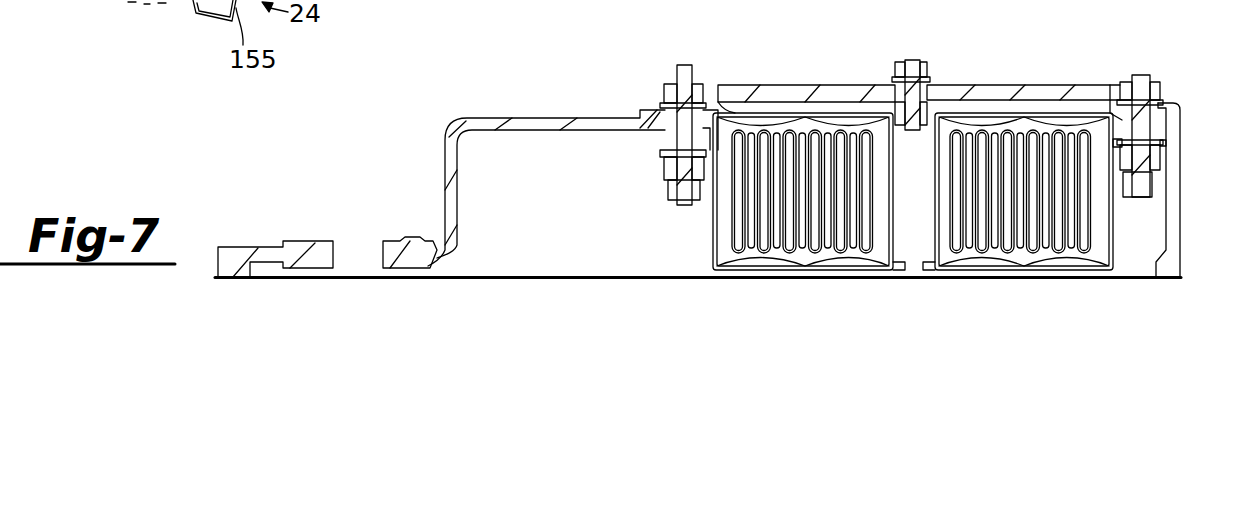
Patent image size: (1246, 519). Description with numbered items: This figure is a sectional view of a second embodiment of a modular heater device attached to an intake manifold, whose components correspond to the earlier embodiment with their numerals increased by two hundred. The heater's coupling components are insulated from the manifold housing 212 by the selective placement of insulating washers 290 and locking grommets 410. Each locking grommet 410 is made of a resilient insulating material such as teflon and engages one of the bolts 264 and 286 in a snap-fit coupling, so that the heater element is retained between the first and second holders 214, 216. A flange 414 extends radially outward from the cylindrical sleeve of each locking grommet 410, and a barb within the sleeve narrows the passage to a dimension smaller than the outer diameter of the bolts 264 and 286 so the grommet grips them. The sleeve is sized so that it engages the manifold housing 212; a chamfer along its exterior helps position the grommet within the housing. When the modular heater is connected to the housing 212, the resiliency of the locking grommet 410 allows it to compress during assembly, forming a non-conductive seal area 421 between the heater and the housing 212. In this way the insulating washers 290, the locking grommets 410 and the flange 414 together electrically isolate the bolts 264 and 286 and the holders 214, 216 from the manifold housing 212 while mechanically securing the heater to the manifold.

The manifold housing 212 is at (452, 133).
The first holder 214 is at (806, 110).
The second holder 216 is at (1120, 238).
The bolt 264 is at (910, 60).
The bolt 286 is at (692, 193).
The insulating washer 290 is at (934, 82).
The locking grommet 410 is at (712, 107).
The flange 414 is at (662, 130).
The non-conductive seal area 421 is at (650, 140).